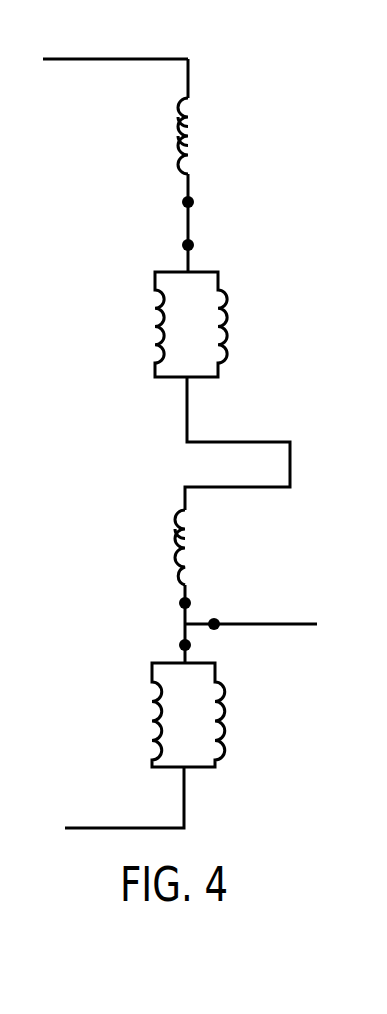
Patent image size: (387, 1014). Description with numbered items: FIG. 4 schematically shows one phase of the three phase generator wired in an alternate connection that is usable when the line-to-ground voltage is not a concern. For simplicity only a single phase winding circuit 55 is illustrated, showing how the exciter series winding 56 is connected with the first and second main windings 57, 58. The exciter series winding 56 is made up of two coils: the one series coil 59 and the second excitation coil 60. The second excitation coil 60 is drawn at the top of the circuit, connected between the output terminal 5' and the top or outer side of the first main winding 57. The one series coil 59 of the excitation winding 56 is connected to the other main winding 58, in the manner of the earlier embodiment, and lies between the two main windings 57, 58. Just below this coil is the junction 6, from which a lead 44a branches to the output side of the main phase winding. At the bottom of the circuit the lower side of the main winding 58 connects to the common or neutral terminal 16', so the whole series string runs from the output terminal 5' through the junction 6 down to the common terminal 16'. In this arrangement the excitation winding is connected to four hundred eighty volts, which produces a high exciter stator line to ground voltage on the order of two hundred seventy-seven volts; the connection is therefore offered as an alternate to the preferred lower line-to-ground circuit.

The output terminal 5' is at (114, 83).
The exciter series winding 56 is at (200, 110).
The series coil 59 is at (189, 147).
The second excitation coil 60 is at (180, 124).
The first main winding 57 is at (201, 330).
The single phase winding circuit 55 is at (123, 497).
The junction node 6 is at (141, 641).
The lead 44a is at (282, 623).
The second main winding 58 is at (200, 727).
The common terminal 16' is at (124, 797).